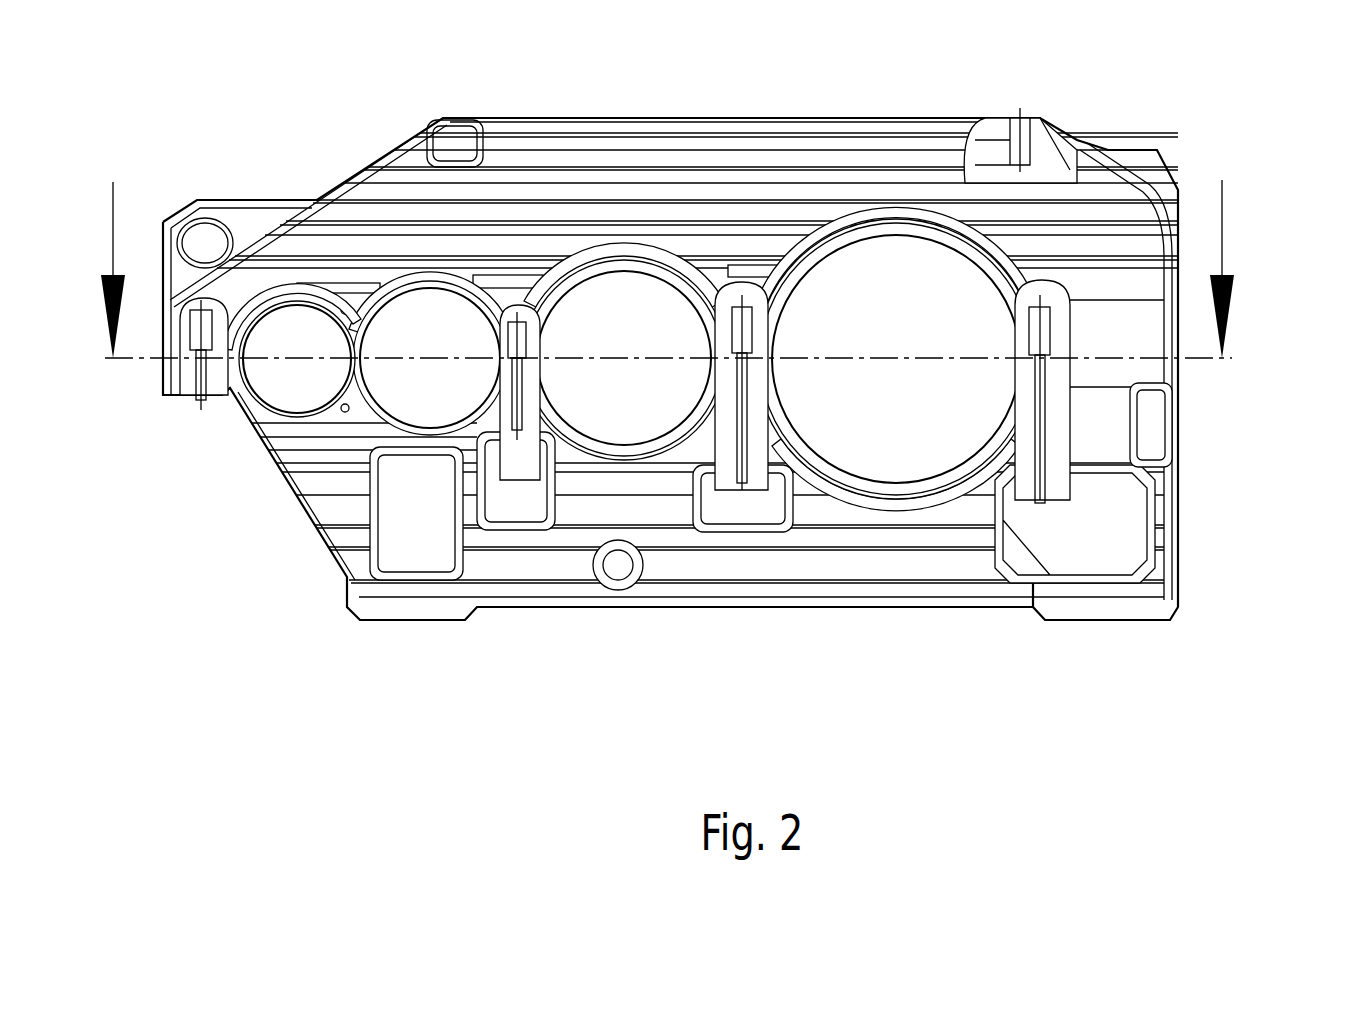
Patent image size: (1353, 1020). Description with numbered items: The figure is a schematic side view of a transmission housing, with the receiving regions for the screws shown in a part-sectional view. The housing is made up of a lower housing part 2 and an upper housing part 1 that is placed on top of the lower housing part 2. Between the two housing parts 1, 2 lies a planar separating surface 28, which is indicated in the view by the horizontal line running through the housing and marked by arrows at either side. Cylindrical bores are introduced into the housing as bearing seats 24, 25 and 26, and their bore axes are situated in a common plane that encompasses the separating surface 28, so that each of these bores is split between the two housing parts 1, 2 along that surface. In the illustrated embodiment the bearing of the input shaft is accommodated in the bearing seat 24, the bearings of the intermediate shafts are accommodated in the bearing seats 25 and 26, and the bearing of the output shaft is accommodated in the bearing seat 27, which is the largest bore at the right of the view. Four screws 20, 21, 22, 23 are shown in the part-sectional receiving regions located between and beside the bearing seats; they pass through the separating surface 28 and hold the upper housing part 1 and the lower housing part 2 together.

The upper housing part 1 is at (757, 178).
The lower housing part 2 is at (938, 565).
The screw 20 is at (200, 337).
The screw 21 is at (517, 427).
The screw 22 is at (748, 438).
The screw 23 is at (1043, 410).
The bearing seat 24 is at (297, 390).
The bearing seat 25 is at (430, 387).
The bearing seat 26 is at (618, 412).
The bearing seat 27 is at (878, 415).
The planar separating surface 28 is at (671, 266).